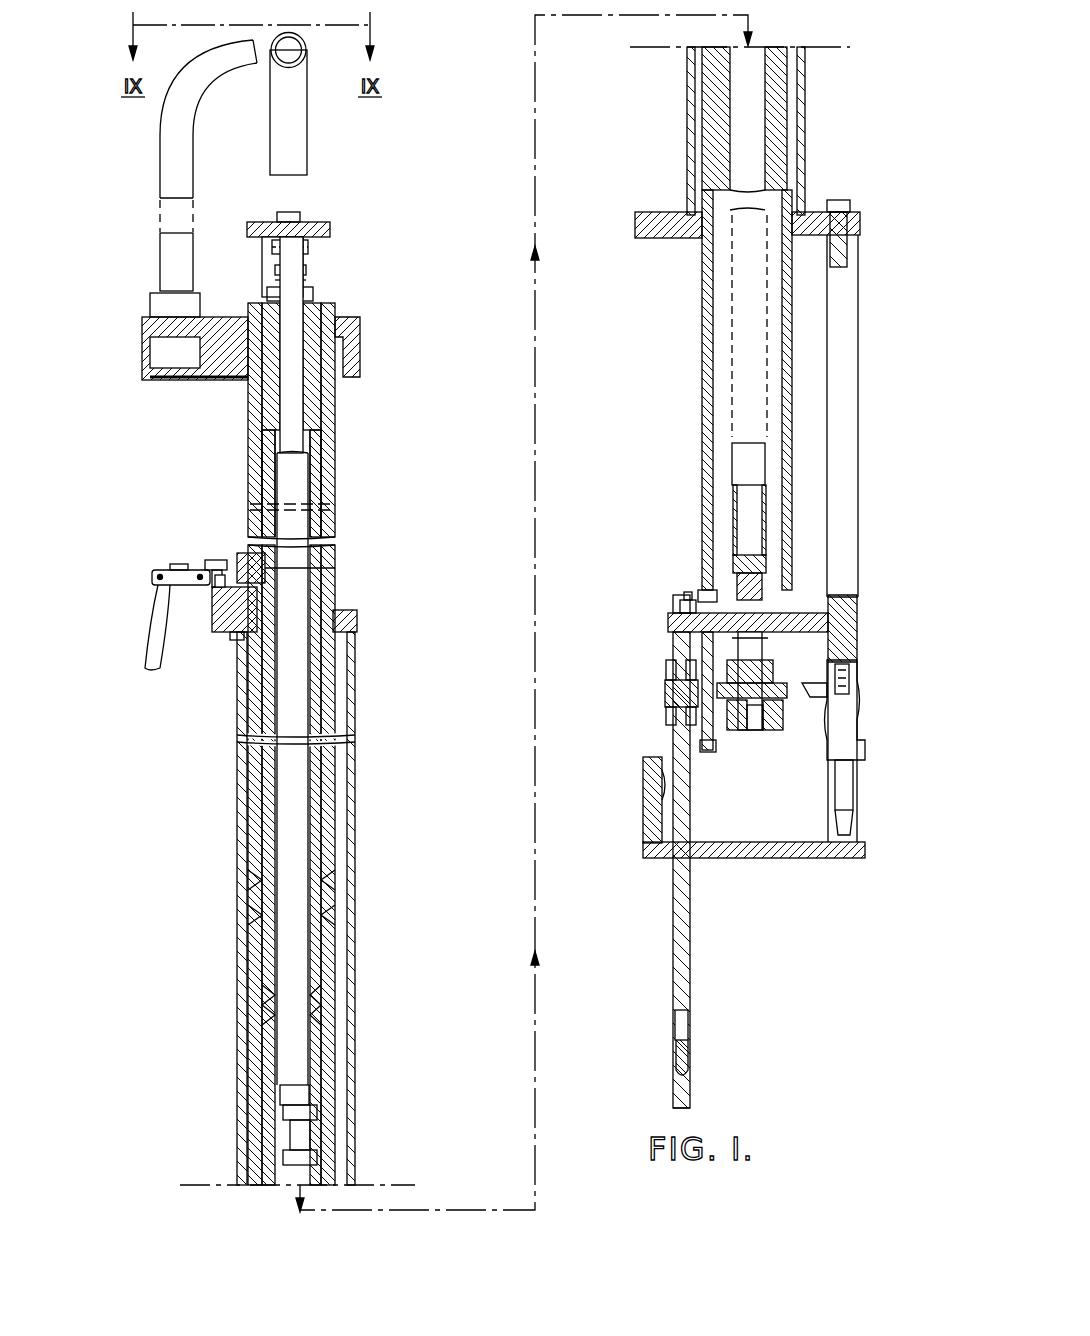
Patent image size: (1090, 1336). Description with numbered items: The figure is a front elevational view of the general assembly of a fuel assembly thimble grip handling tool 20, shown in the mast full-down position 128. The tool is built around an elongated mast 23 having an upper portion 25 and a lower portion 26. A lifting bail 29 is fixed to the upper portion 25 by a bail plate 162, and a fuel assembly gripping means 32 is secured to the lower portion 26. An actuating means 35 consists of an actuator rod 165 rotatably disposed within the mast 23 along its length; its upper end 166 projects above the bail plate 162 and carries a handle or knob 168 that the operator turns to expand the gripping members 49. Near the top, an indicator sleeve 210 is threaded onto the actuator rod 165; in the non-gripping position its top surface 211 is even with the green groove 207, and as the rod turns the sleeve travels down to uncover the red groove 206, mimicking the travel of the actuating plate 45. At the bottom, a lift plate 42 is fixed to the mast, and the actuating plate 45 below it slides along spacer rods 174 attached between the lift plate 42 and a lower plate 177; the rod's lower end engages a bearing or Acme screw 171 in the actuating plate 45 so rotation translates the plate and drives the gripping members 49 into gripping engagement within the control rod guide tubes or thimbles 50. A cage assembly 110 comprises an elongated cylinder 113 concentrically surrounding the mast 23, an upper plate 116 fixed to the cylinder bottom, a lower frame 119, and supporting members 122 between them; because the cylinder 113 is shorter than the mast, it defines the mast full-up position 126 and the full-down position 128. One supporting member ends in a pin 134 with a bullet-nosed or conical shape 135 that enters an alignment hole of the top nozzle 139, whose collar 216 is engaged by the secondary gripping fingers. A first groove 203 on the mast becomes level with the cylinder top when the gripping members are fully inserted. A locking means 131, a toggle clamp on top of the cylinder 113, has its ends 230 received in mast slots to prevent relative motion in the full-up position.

The tool 20 is at (412, 157).
The lifting bail 29 is at (161, 153).
The bail plate 162 is at (145, 310).
The upper portion 25 is at (372, 323).
The indicator sleeve 210 is at (340, 298).
The actuating means 35 is at (318, 222).
The handle or knob 168 is at (247, 227).
The green groove 207 is at (272, 258).
The upper end of actuator rod 166 is at (312, 270).
The red groove 206 is at (275, 278).
The top surface of indicator sleeve 211 is at (312, 292).
The elongated mast 23 is at (335, 452).
The actuator rod 165 is at (280, 473).
The first groove 203 is at (335, 512).
The ends of toggle clamps 230 is at (330, 572).
The locking means or toggle clamps 131 is at (158, 630).
The elongated cylinder 113 is at (350, 665).
The cage assembly 110 is at (857, 512).
The supporting members 122 is at (790, 428).
The upper plate 116 is at (668, 212).
The mast full-up position 126 is at (660, 243).
The lower portion 26 is at (800, 595).
The mast full-down position 128 is at (690, 596).
The lift plate 42 is at (668, 625).
The gripping members 49 is at (692, 995).
The control rod guide tubes or thimbles 50 is at (692, 1080).
The fuel assembly gripping means 32 is at (633, 668).
The actuating plate 45 is at (665, 697).
The bearing or Acme screw 171 is at (775, 668).
The spacer rods 174 is at (728, 735).
The lower plate 177 is at (780, 735).
The lower frame 119 is at (812, 695).
The pin 134 is at (837, 790).
The bullet-nosed or conical shape 135 is at (835, 825).
The top nozzle 139 is at (643, 770).
The collar 216 is at (660, 790).